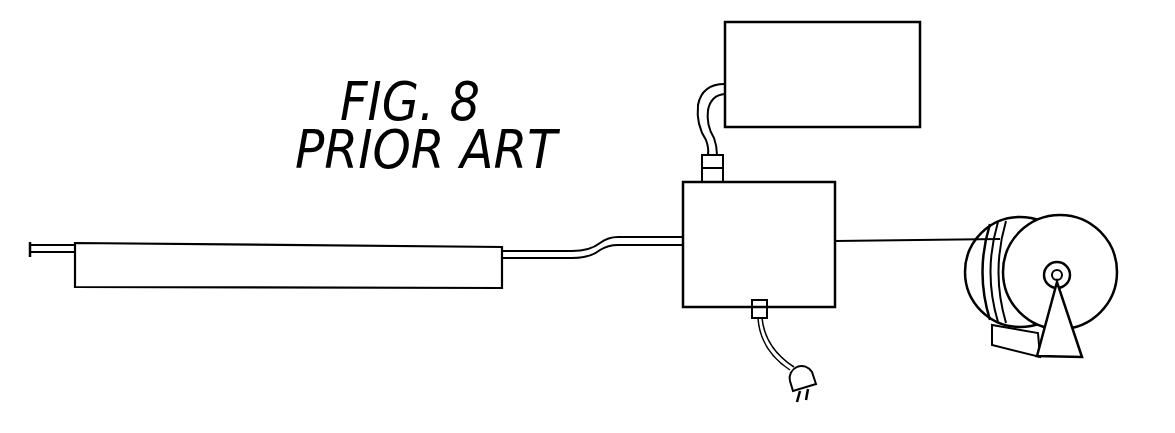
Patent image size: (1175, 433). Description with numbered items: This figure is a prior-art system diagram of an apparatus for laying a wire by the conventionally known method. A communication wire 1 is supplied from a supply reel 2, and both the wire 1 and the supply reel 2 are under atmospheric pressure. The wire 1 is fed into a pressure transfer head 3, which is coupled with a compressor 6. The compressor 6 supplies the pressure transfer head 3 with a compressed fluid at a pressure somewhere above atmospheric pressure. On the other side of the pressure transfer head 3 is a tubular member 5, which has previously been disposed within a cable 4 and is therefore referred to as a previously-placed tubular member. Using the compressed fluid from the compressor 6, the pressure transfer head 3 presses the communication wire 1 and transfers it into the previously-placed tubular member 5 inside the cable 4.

The communication wire 1 is at (902, 243).
The supply reel 2 is at (1100, 232).
The pressure transfer head 3 is at (838, 192).
The cable 4 is at (461, 248).
The tubular member 5 is at (565, 258).
The compressor 6 is at (920, 45).